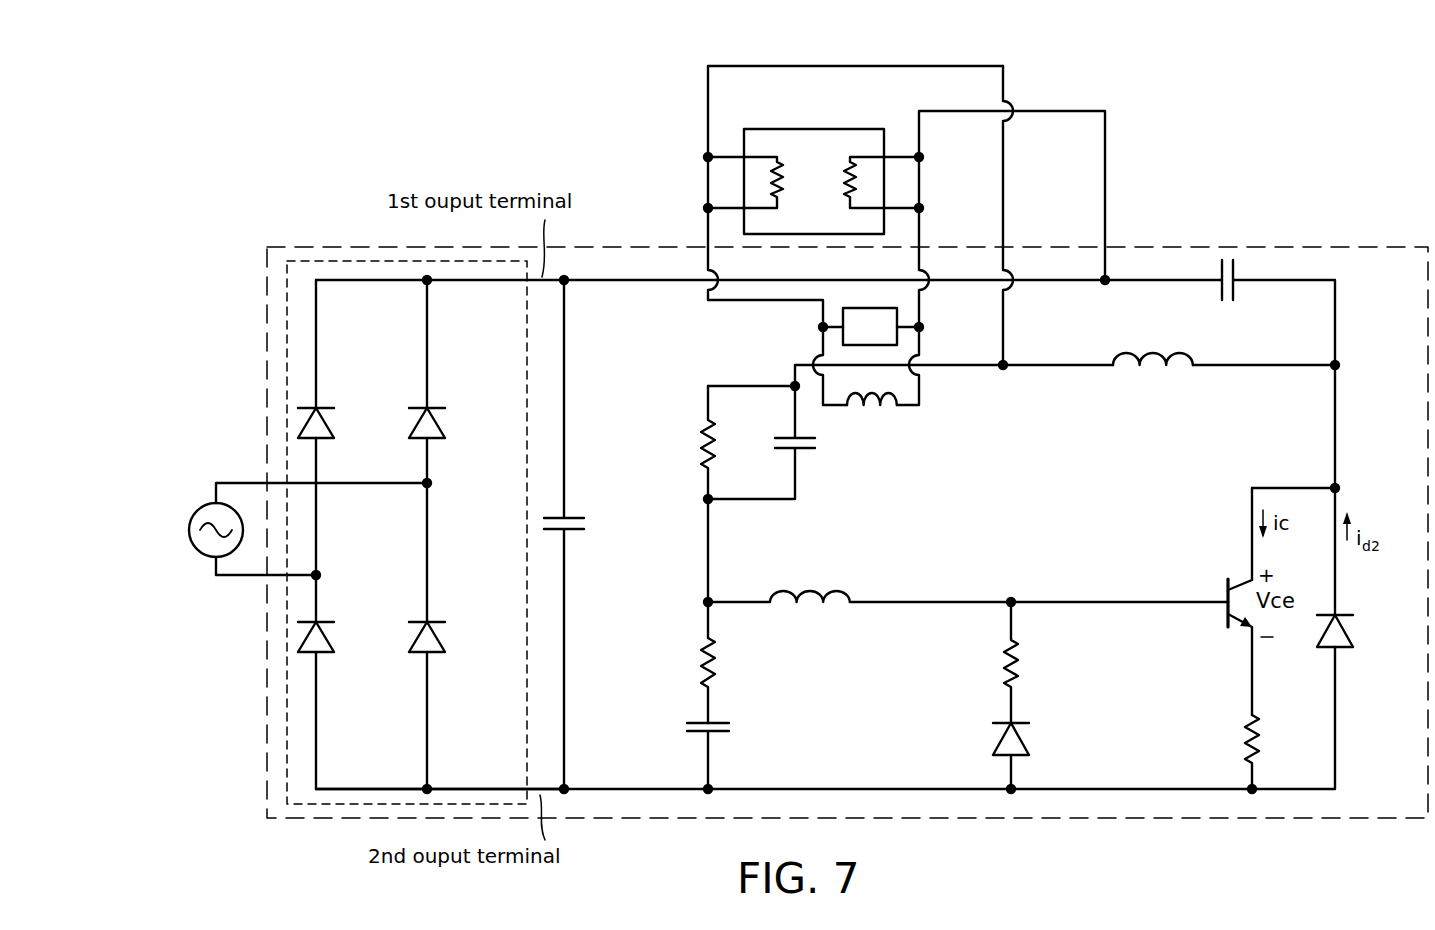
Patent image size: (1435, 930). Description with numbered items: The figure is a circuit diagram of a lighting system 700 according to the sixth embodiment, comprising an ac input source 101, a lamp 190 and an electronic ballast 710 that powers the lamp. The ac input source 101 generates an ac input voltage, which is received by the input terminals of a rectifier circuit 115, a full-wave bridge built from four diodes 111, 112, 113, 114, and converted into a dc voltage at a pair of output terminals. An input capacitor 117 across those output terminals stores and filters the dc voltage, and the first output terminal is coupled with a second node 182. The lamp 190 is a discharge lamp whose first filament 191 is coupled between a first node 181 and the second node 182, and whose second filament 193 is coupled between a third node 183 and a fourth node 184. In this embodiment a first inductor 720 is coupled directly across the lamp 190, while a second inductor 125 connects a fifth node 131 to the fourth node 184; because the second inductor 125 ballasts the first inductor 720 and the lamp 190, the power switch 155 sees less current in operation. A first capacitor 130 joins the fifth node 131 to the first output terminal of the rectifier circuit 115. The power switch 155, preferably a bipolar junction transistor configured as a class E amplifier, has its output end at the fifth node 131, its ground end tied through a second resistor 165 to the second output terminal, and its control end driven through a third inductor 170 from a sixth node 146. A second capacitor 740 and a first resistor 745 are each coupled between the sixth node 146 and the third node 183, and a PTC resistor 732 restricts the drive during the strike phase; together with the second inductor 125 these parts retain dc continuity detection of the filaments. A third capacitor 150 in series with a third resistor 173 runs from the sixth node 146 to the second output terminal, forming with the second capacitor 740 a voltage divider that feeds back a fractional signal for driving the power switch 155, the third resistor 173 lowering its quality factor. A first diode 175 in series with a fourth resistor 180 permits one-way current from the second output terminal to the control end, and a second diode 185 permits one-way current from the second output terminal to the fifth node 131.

The lighting system 700 is at (1272, 132).
The electronic ballast 710 is at (338, 247).
The ac input source 101 is at (201, 509).
The diode 111 is at (333, 428).
The diode 112 is at (444, 428).
The diode 113 is at (333, 642).
The diode 114 is at (444, 642).
The rectifier circuit 115 is at (286, 790).
The input capacitor 117 is at (586, 522).
The second inductor 125 is at (1158, 352).
The first capacitor 130 is at (1230, 303).
The fifth node 131 is at (1341, 485).
The sixth node 146 is at (706, 600).
The third capacitor 150 is at (730, 728).
The power switch 155 is at (1243, 580).
The second resistor 165 is at (1241, 743).
The third inductor 170 is at (810, 590).
The third resistor 173 is at (696, 665).
The first diode 175 is at (1000, 748).
The fourth resistor 180 is at (1000, 665).
The first node 181 is at (922, 208).
The second node 182 is at (922, 157).
The third node 183 is at (708, 208).
The fourth node 184 is at (708, 157).
The second diode 185 is at (1354, 635).
The lamp 190 is at (836, 129).
The first filament 191 is at (843, 188).
The second filament 193 is at (786, 178).
The first inductor 720 is at (880, 417).
The PTC resistor 732 is at (853, 339).
The second capacitor 740 is at (818, 443).
The first resistor 745 is at (699, 436).